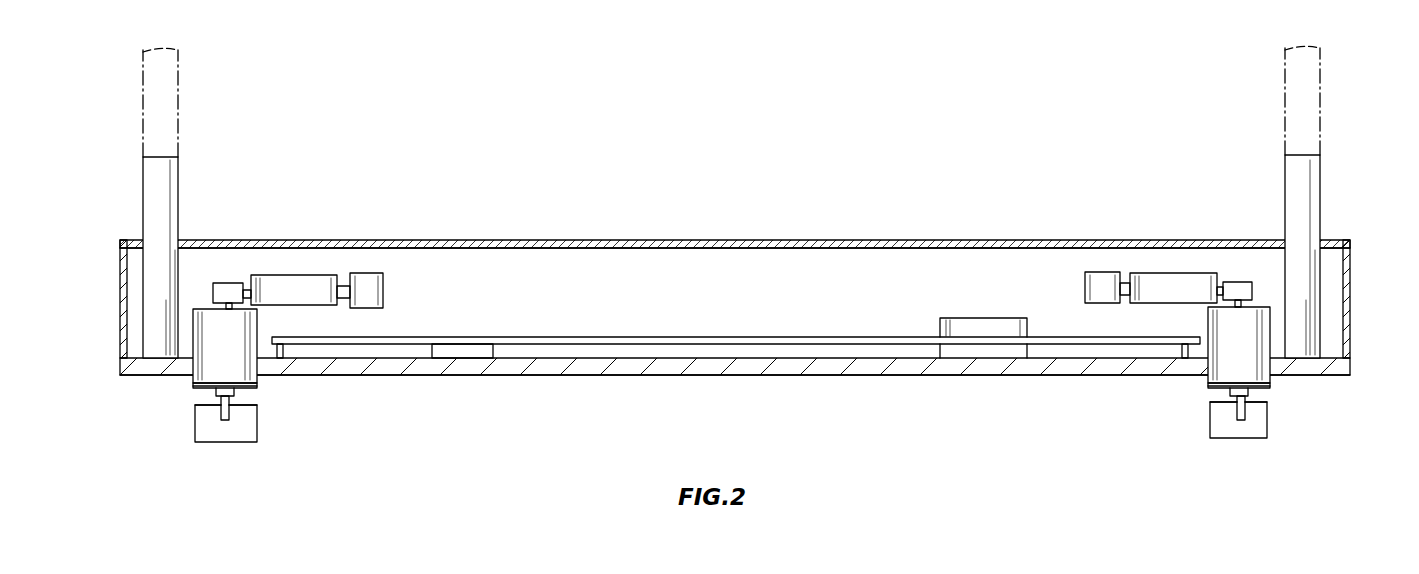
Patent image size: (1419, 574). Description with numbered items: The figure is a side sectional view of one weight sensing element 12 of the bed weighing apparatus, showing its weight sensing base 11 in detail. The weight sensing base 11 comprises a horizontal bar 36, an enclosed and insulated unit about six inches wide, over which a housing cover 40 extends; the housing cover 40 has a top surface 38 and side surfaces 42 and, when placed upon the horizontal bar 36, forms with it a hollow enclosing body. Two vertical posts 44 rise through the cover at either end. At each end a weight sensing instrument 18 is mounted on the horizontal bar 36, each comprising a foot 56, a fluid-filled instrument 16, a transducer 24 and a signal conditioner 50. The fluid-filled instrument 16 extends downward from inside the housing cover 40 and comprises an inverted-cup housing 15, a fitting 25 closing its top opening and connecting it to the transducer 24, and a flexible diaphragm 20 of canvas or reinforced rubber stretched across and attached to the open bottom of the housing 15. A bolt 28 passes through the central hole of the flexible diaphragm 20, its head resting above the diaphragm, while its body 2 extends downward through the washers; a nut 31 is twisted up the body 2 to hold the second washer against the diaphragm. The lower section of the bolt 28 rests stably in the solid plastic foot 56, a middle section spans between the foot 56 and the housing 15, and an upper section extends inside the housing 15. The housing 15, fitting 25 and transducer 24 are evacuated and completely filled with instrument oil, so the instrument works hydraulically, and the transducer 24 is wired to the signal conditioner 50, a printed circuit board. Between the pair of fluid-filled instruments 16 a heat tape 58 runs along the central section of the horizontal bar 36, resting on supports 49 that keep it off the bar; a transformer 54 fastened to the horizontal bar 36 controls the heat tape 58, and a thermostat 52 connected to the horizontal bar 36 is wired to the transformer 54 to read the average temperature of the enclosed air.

The body 2 is at (215, 408).
The weight sensing base 11 is at (917, 375).
The weight sensing element 12 is at (773, 398).
The housing 15 is at (193, 384).
The fluid-filled instrument 16 is at (257, 386).
The weight sensing instrument 18 is at (1258, 315).
The flexible diaphragm 20 is at (216, 394).
The transducer 24 is at (297, 285).
The fitting 25 is at (228, 283).
The bolt 28 is at (226, 420).
The nut 31 is at (257, 423).
The horizontal bar 36 is at (576, 376).
The top surface 38 is at (518, 240).
The housing cover 40 is at (666, 240).
The side surfaces 42 is at (121, 278).
The post 44 is at (175, 190).
The supports 49 is at (286, 352).
The signal conditioner 50 is at (370, 278).
The thermostat 52 is at (470, 359).
The transformer 54 is at (985, 318).
The foot 56 is at (243, 432).
The heat tape 58 is at (820, 338).